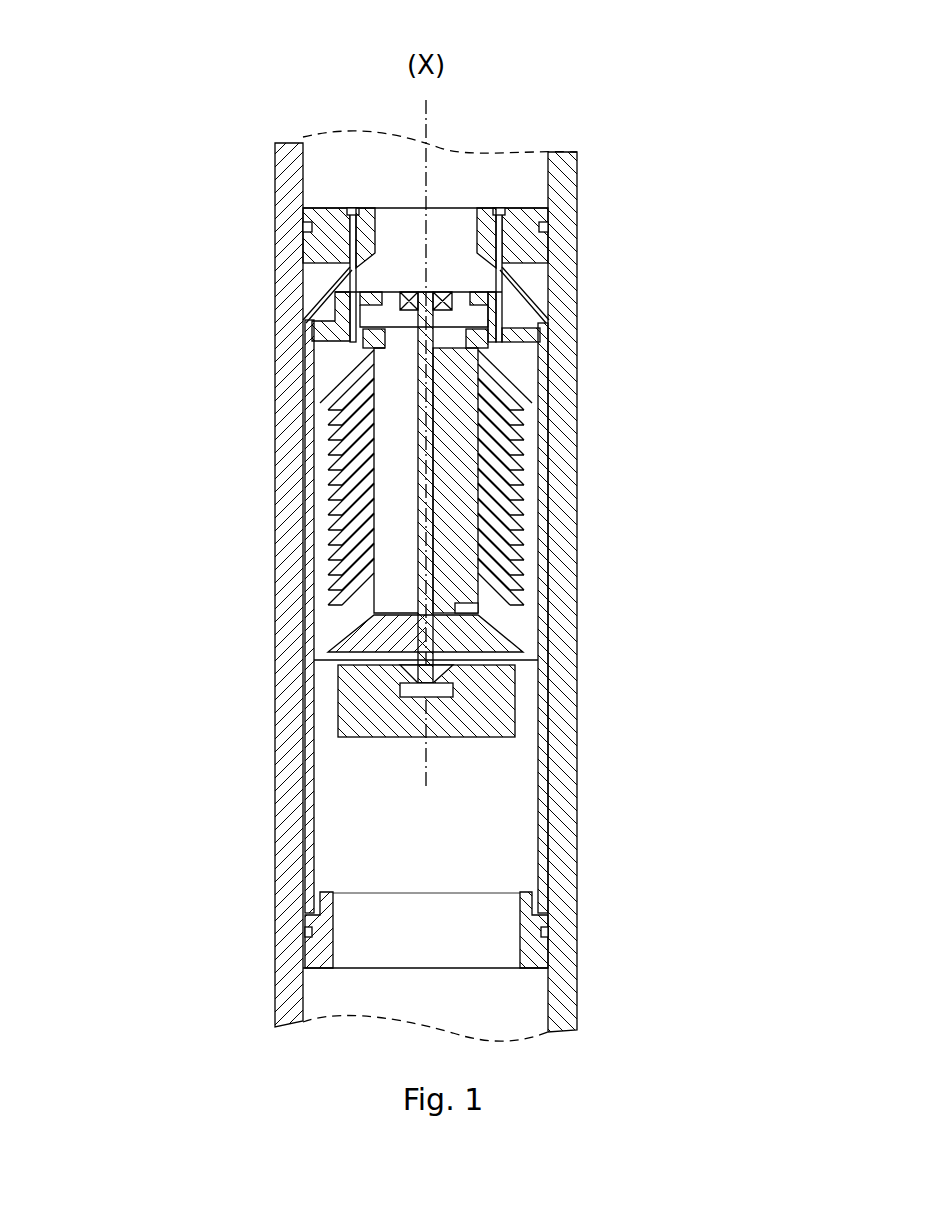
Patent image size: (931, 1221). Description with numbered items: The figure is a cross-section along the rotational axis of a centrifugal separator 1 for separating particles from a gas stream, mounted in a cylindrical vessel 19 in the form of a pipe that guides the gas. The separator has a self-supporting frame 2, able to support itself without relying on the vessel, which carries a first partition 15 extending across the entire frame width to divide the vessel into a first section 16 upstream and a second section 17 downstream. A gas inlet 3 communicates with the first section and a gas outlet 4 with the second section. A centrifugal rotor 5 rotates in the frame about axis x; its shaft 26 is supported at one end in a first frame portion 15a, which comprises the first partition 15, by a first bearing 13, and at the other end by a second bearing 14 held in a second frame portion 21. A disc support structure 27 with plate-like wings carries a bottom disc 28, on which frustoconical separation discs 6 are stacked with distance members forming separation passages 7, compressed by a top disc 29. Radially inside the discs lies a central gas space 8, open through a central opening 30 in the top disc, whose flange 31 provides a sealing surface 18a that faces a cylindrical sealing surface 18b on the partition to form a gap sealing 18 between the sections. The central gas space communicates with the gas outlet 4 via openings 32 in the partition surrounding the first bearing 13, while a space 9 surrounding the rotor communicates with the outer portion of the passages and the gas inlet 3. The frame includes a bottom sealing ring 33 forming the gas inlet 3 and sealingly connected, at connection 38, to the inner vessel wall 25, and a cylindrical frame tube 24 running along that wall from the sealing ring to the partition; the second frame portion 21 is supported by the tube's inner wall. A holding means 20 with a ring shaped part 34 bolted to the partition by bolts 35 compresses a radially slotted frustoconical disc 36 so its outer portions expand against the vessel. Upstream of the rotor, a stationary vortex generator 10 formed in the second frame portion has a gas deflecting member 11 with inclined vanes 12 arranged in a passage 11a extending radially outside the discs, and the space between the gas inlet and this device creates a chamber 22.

The centrifugal separator 1 is at (212, 36).
The self-supporting frame 2 is at (306, 342).
The gas inlet 3 is at (430, 932).
The gas outlet 4 is at (397, 262).
The centrifugal rotor 5 is at (534, 510).
The frustoconical separation discs 6 is at (522, 545).
The separation passages 7 is at (520, 590).
The central gas space 8 is at (395, 495).
The space surrounding the rotor 9 is at (320, 525).
The stationary vortex generator 10 is at (529, 678).
The gas deflecting member 11 is at (527, 722).
The passage 11a is at (327, 695).
The vanes 12 is at (527, 738).
The first bearing 13 is at (443, 290).
The second bearing 14 is at (338, 668).
The first partition 15 is at (500, 333).
The first frame portion 15a is at (486, 238).
The first section 16 is at (527, 367).
The second section 17 is at (452, 182).
The gap sealing 18 is at (545, 325).
The sealing surface 18a is at (492, 337).
The cylindrical sealing surface 18b is at (524, 295).
The cylindrical vessel 19 is at (290, 210).
The holding means 20 is at (316, 283).
The second frame portion 21 is at (358, 723).
The chamber 22 is at (340, 838).
The cylindrical frame tube 24 is at (298, 567).
The inner vessel wall 25 is at (312, 208).
The shaft 26 is at (425, 637).
The disc support structure 27 is at (456, 603).
The bottom disc 28 is at (478, 629).
The top disc 29 is at (545, 372).
The central opening 30 is at (452, 340).
The flange 31 is at (365, 342).
The openings 32 is at (505, 280).
The bottom sealing ring 33 is at (320, 950).
The ring shaped part 34 is at (316, 237).
The bolts 35 is at (348, 268).
The radially slotted frustoconical disc 36 is at (321, 302).
The sealing connection 38 is at (307, 932).